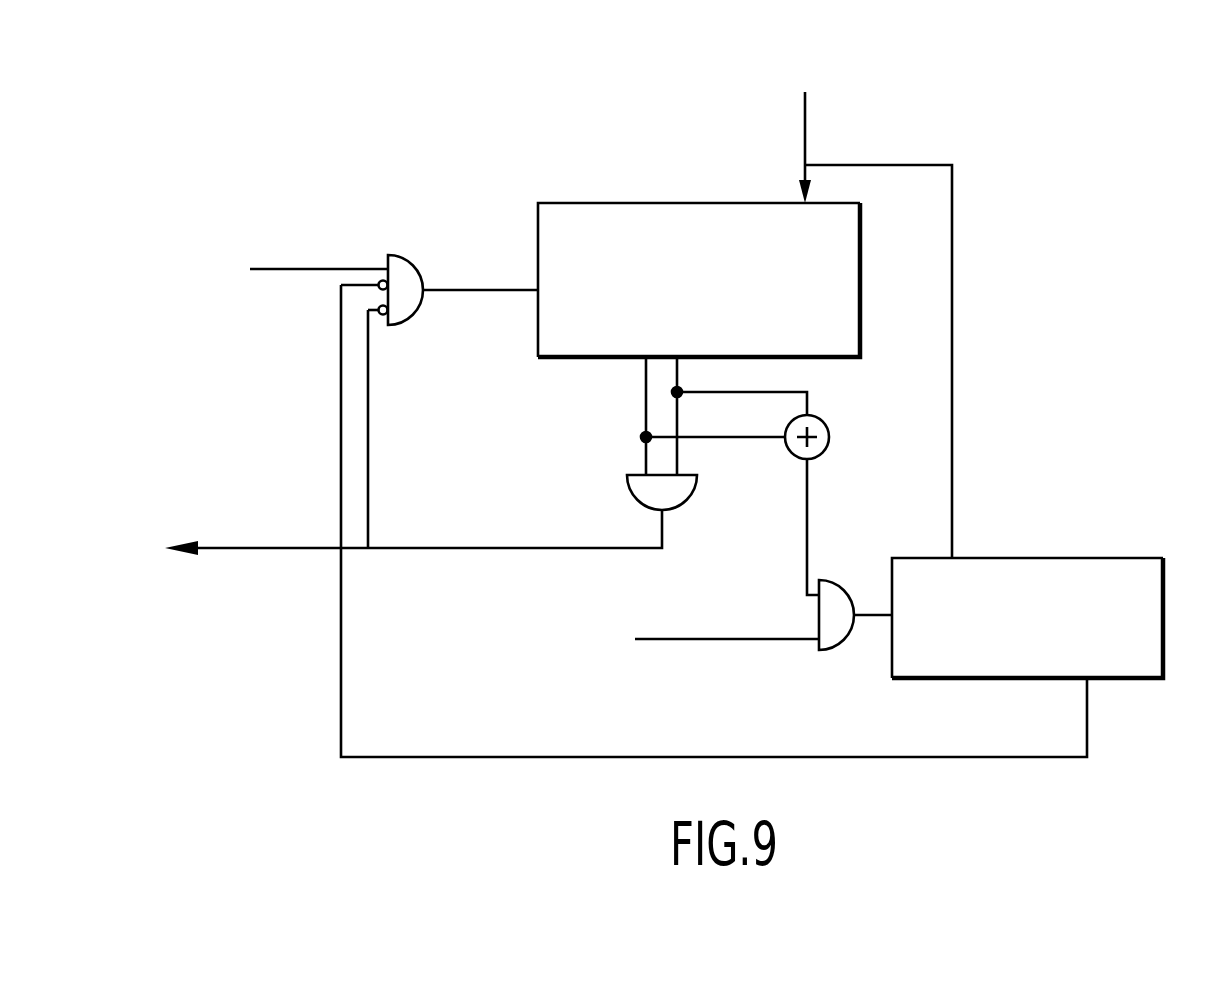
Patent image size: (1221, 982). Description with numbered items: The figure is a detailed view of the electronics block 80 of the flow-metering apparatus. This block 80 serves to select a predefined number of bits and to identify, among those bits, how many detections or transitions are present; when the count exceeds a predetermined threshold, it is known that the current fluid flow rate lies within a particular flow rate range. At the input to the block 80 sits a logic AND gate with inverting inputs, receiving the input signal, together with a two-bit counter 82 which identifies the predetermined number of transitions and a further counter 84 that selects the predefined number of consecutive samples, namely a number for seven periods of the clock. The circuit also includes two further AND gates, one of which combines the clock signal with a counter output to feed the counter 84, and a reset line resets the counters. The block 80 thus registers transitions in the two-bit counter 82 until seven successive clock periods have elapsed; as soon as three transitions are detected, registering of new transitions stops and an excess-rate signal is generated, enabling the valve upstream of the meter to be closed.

The electronics block 80 is at (1092, 290).
The 2-bit counter 82 is at (714, 310).
The counter 84 is at (1039, 638).